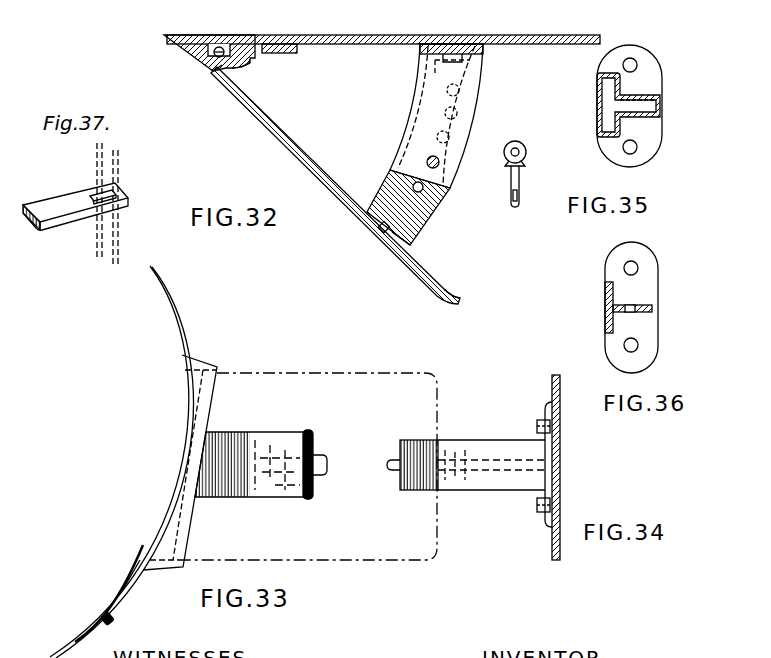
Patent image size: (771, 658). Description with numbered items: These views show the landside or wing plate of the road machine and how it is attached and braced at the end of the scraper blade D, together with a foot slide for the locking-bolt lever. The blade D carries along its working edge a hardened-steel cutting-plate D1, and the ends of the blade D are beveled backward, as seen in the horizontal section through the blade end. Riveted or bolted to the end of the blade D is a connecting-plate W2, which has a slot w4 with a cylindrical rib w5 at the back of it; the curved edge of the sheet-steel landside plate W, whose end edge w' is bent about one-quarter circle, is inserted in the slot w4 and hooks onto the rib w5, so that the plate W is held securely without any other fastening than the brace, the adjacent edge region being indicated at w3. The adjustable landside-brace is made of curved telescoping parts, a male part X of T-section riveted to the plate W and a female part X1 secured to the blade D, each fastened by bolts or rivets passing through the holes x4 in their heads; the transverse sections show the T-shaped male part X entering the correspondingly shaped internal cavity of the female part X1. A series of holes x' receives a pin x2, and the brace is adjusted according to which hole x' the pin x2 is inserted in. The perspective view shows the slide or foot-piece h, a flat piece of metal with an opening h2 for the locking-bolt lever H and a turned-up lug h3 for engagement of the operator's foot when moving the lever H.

In FIG. 32, the blade D is at (372, 30).
In FIG. 33, the blade D is at (181, 461).
In FIG. 33, the cutting-plate D1 is at (124, 596).
In FIG. 32, the landside plate W is at (335, 185).
In FIG. 33, the landside plate W is at (310, 466).
In FIG. 34, the landside plate W is at (563, 467).
In FIG. 32, the connecting-plate W2 is at (205, 52).
In FIG. 33, the connecting-plate W2 is at (210, 363).
In FIG. 32, the wedge edge w3 is at (212, 64).
In FIG. 32, the slot w4 is at (219, 46).
In FIG. 32, the cylindrical rib w5 is at (233, 66).
In FIG. 32, the end edge of landside plate w' is at (461, 297).
In FIG. 32, the brace-arm (male part) X is at (444, 229).
In FIG. 36, the brace-arm (male part) X is at (598, 318).
In FIG. 34, the brace-arm (male part) X is at (492, 435).
In FIG. 32, the female brace part X1 is at (412, 104).
In FIG. 35, the female brace part X1 is at (594, 104).
In FIG. 33, the female brace part X1 is at (262, 446).
In FIG. 32, the adjustment holes x' is at (417, 207).
In FIG. 35, the adjustment holes x' is at (638, 88).
In FIG. 32, the pin x2 is at (440, 163).
In FIG. 36, the pin x2 is at (631, 305).
In FIG. 32, the head holes x4 is at (450, 44).
In FIG. 35, the head holes x4 is at (635, 63).
In FIG. 36, the head holes x4 is at (636, 270).
In FIG. 34, the head holes x4 is at (534, 468).
In FIG. 37, the slide or foot-piece h is at (70, 213).
In FIG. 37, the opening h2 is at (128, 196).
In FIG. 37, the lug or turned-up end h3 is at (33, 204).
In FIG. 37, the locking-bolt lever H is at (142, 154).